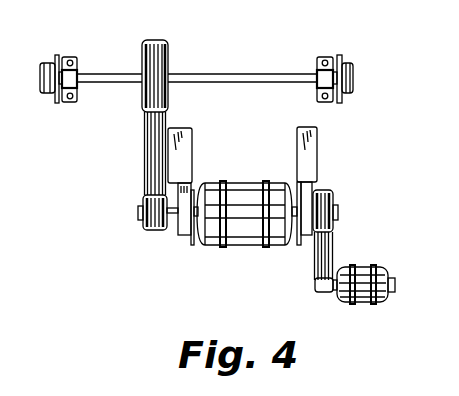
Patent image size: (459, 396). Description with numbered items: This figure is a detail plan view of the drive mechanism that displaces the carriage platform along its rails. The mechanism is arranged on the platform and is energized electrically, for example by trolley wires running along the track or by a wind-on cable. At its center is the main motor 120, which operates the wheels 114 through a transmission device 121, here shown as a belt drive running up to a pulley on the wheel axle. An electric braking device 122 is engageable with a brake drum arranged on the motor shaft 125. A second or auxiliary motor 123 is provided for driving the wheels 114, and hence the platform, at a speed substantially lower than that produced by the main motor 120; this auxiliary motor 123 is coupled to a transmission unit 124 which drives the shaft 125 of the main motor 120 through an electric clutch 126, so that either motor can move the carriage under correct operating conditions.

The wheels 114 is at (47, 57).
The main motor 120 is at (250, 246).
The transmission device 121 is at (146, 140).
The electric braking device 122 is at (190, 160).
The auxiliary motor 123 is at (380, 266).
The transmission unit 124 is at (313, 247).
The motor shaft 125 is at (178, 218).
The electric clutch 126 is at (312, 160).